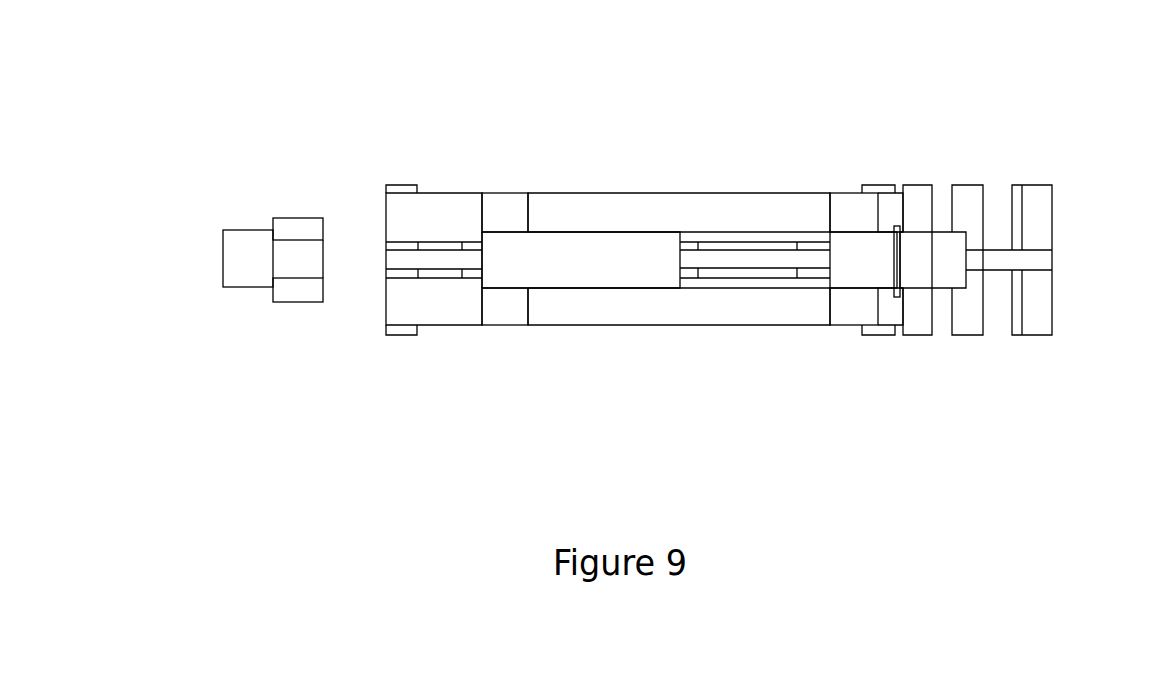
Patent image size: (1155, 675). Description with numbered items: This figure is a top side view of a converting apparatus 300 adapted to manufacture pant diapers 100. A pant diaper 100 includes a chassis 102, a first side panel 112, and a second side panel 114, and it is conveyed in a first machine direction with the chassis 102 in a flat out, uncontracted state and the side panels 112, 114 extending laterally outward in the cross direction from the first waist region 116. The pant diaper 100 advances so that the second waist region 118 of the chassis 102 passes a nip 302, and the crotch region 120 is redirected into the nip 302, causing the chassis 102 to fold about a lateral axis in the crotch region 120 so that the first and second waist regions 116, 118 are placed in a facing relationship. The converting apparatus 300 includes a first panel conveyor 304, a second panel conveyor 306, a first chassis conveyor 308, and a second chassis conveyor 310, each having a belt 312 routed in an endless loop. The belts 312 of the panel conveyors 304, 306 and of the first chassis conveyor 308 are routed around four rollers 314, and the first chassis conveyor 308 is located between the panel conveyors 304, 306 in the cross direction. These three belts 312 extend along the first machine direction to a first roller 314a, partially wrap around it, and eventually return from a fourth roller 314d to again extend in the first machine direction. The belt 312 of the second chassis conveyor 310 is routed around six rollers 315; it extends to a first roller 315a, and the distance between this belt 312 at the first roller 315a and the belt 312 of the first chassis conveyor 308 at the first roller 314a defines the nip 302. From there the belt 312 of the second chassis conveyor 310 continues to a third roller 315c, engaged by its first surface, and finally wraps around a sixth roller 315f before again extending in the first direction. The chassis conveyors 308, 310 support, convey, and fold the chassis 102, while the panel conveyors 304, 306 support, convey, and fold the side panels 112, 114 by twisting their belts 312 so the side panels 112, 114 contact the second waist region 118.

The pant diaper 100 is at (255, 278).
The chassis 102 is at (555, 267).
The first side panel 112 is at (292, 228).
The second side panel 114 is at (305, 292).
The first waist region 116 is at (490, 253).
The second waist region 118 is at (305, 255).
The crotch region 120 is at (230, 250).
The converting apparatus 300 is at (562, 45).
The nip 302 is at (884, 168).
The first panel conveyor 304 is at (780, 215).
The second panel conveyor 306 is at (728, 303).
The first chassis conveyor 308 is at (727, 252).
The second chassis conveyor 310 is at (1027, 255).
The belt 312 is at (768, 222).
The rollers 314 is at (632, 247).
The first roller 314a is at (880, 335).
The fourth roller 314d is at (405, 190).
The rollers 315 is at (990, 359).
The first roller 315a is at (917, 335).
The third roller 315c is at (967, 315).
The sixth roller 315f is at (1028, 315).